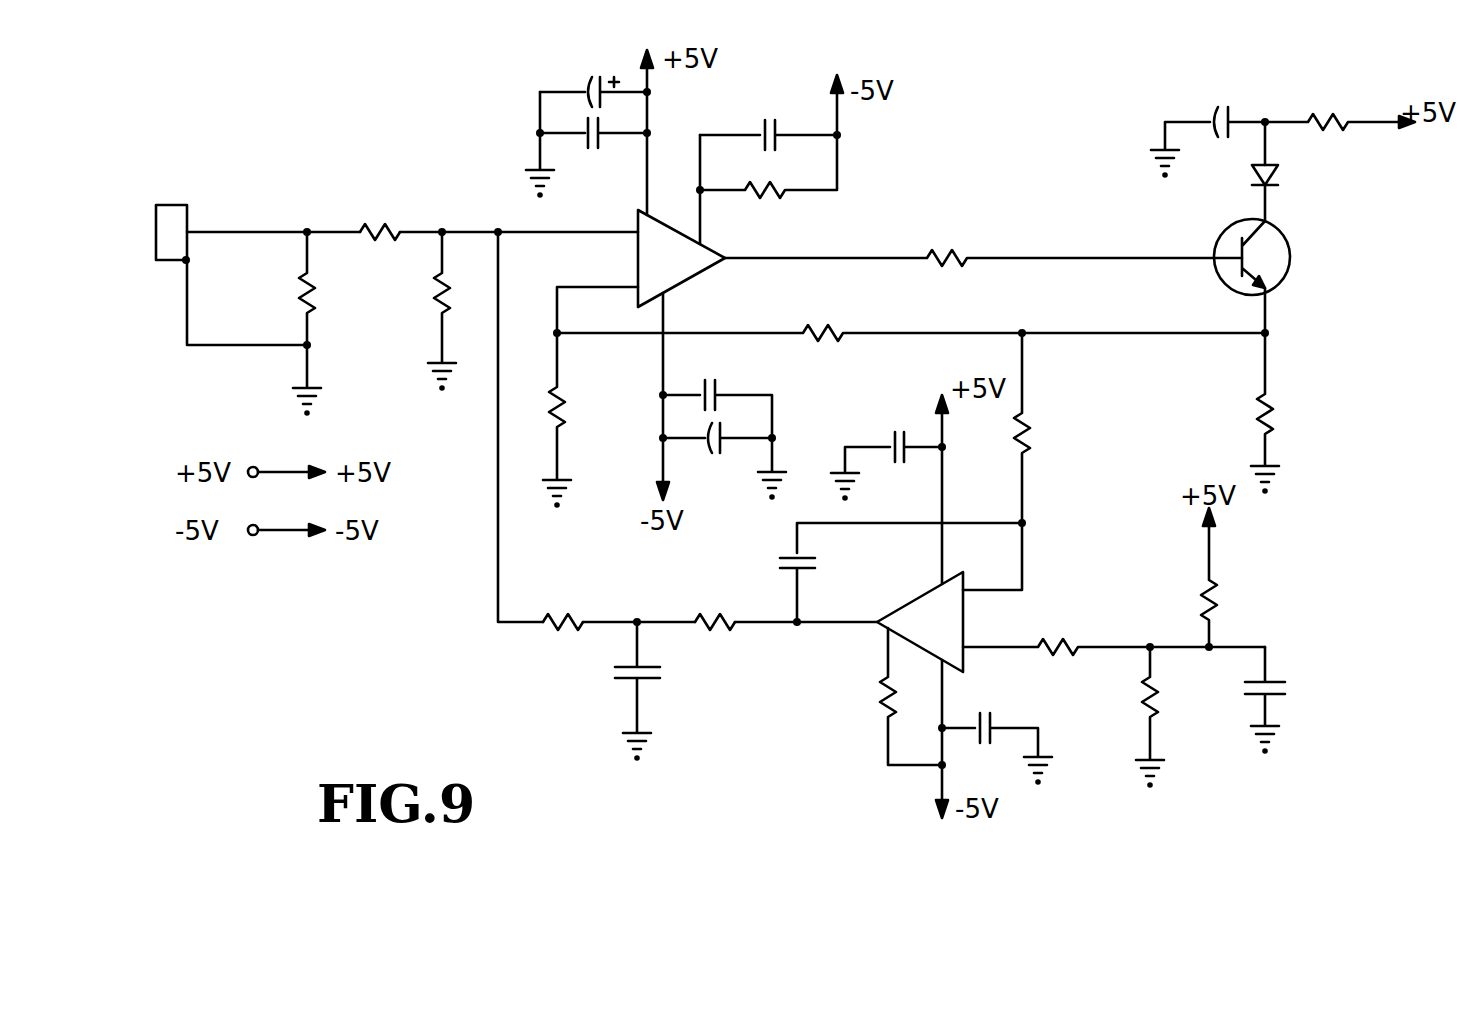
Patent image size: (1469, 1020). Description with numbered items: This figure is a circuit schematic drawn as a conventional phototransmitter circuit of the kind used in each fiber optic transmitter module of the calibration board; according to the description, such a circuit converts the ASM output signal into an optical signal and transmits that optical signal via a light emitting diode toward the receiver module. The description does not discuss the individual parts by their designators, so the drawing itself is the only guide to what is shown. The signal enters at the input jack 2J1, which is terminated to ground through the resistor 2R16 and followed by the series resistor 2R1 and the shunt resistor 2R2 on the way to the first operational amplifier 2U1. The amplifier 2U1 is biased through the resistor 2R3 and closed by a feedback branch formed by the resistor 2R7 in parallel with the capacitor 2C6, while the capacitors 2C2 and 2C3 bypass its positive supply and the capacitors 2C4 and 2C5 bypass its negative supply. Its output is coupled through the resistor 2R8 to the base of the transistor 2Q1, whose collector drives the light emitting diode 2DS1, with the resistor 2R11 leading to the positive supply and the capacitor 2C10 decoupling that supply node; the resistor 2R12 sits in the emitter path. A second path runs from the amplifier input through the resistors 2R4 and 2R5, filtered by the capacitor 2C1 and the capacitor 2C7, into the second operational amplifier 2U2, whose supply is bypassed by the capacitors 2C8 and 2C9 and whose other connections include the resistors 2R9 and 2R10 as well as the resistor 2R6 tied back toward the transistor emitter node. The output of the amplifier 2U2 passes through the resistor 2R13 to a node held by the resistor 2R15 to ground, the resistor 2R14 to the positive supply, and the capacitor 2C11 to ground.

The input jack connector 2J1 is at (178, 205).
The resistor 2R1 is at (383, 217).
The resistor 2R2 is at (414, 311).
The resistor 2R3 is at (590, 397).
The resistor 2R4 is at (563, 606).
The resistor 2R5 is at (715, 606).
The resistor 2R6 is at (911, 319).
The resistor 2R7 is at (768, 184).
The resistor 2R8 is at (983, 242).
The resistor 2R9 is at (878, 696).
The resistor 2R10 is at (1036, 461).
The resistor 2R11 is at (1332, 107).
The resistor 2R12 is at (1299, 413).
The resistor 2R13 is at (1114, 633).
The resistor 2R14 is at (1248, 586).
The resistor 2R15 is at (1183, 717).
The resistor 2R16 is at (269, 323).
The capacitor 2C1 is at (659, 691).
The electrolytic capacitor 2C2 is at (593, 75).
The capacitor 2C3 is at (586, 144).
The capacitor 2C4 is at (724, 426).
The electrolytic capacitor 2C5 is at (717, 458).
The capacitor 2C6 is at (768, 119).
The capacitor 2C7 is at (901, 572).
The capacitor 2C8 is at (886, 450).
The capacitor 2C9 is at (997, 736).
The electrolytic capacitor 2C10 is at (1208, 129).
The capacitor 2C11 is at (1299, 700).
The operational amplifier 2U1 is at (681, 258).
The operational amplifier 2U2 is at (920, 622).
The transistor 2Q1 is at (1280, 261).
The light emitting diode 2DS1 is at (1334, 156).